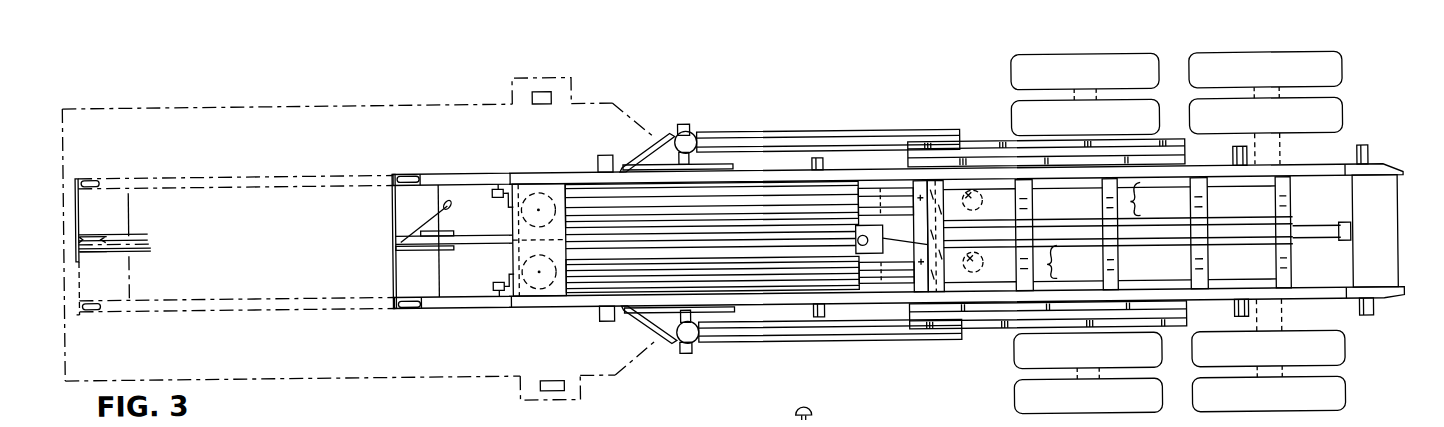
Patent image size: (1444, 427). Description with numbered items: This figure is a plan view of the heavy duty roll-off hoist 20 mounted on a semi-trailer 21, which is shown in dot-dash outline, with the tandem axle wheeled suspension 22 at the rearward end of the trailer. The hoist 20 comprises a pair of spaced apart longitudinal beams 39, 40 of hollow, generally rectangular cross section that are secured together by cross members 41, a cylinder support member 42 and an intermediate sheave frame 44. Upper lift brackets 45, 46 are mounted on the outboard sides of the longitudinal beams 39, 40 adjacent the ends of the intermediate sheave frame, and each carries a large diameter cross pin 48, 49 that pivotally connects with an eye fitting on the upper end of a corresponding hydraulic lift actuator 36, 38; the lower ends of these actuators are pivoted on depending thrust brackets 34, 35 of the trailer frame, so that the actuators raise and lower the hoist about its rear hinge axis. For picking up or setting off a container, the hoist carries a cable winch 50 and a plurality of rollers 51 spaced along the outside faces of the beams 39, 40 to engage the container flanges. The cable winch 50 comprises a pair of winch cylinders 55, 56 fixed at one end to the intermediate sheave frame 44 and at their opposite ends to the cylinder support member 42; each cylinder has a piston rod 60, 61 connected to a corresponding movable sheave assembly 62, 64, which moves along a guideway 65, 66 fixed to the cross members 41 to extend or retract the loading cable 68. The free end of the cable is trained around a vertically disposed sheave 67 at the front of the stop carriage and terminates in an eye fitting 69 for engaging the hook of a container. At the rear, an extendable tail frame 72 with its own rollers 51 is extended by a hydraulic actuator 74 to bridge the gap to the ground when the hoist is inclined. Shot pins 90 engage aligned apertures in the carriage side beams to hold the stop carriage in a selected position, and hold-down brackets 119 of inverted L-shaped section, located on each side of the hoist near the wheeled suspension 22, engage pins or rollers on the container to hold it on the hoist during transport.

The roll-off hoist 20 is at (1320, 306).
The semi-trailer 21 is at (394, 380).
The tandem axle wheeled suspension 22 is at (1008, 108).
The thrust bracket 34 is at (977, 336).
The thrust bracket 35 is at (963, 128).
The hydraulic lift actuator 36 is at (877, 330).
The hydraulic lift actuator 38 is at (778, 139).
The longitudinal beam 39 is at (789, 303).
The longitudinal beam 40 is at (711, 176).
The cross members 41 is at (1100, 195).
The cylinder support member 42 is at (866, 232).
The intermediate sheave frame 44 is at (518, 185).
The upper lift bracket 45 is at (667, 313).
The upper lift bracket 46 is at (657, 154).
The cross pin 48 is at (690, 351).
The cross pin 49 is at (687, 122).
The cable winch 50 is at (508, 253).
The rollers 51 is at (610, 153).
The winch cylinder 55 is at (586, 273).
The winch cylinder 56 is at (573, 194).
The piston rod 60 is at (920, 265).
The piston rod 61 is at (912, 197).
The movable sheave assembly 62 is at (975, 265).
The movable sheave assembly 64 is at (972, 198).
The guideway 65 is at (1067, 262).
The guideway 66 is at (1149, 199).
The vertically disposed sheave 67 is at (92, 231).
The loading cable 68 is at (414, 234).
The eye fitting 69 is at (447, 196).
The extendable tail frame 72 is at (1397, 295).
The hydraulic actuator 74 is at (1308, 233).
The shot pins 90 is at (498, 184).
The hold-down brackets 119 is at (987, 141).